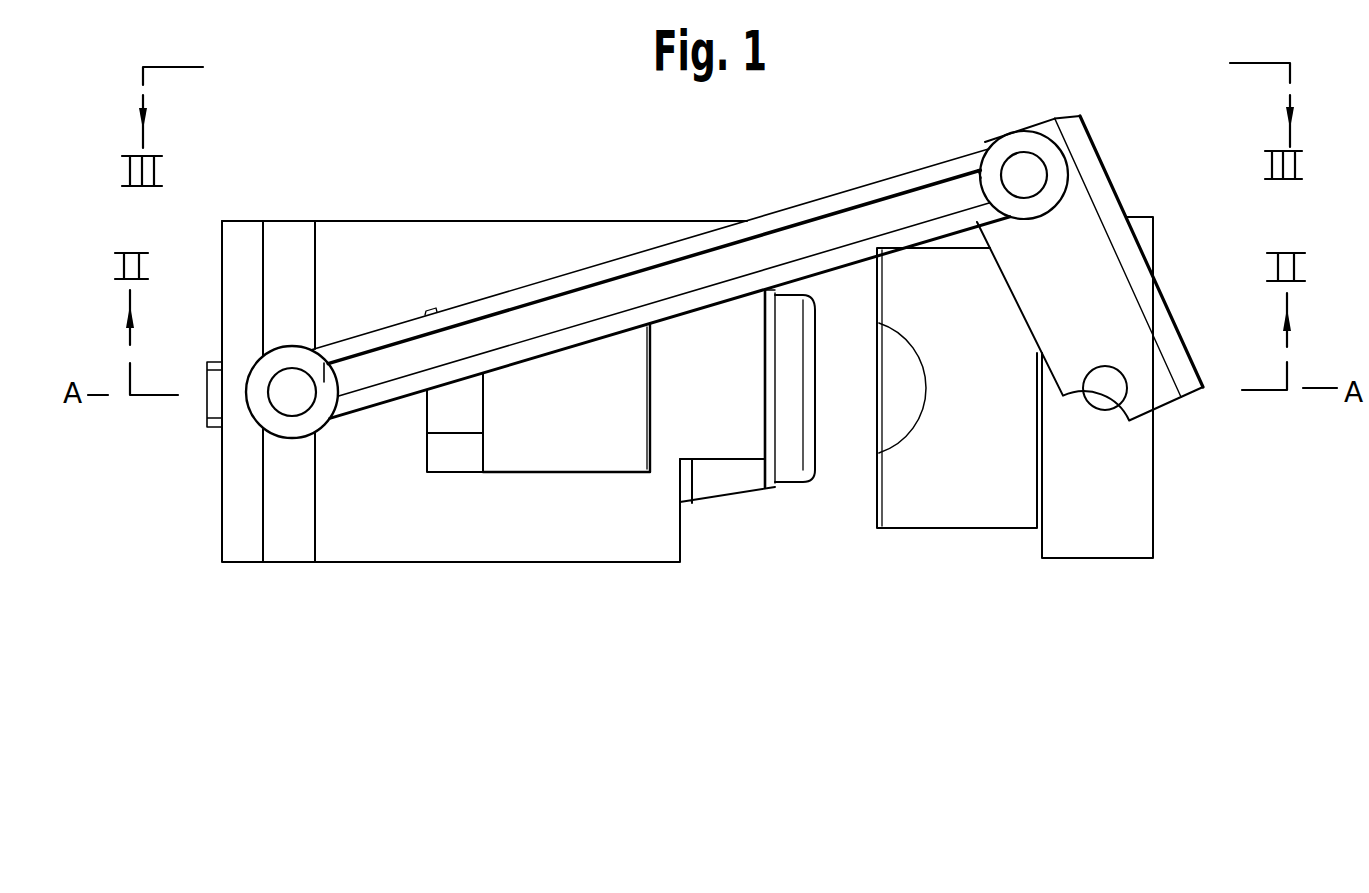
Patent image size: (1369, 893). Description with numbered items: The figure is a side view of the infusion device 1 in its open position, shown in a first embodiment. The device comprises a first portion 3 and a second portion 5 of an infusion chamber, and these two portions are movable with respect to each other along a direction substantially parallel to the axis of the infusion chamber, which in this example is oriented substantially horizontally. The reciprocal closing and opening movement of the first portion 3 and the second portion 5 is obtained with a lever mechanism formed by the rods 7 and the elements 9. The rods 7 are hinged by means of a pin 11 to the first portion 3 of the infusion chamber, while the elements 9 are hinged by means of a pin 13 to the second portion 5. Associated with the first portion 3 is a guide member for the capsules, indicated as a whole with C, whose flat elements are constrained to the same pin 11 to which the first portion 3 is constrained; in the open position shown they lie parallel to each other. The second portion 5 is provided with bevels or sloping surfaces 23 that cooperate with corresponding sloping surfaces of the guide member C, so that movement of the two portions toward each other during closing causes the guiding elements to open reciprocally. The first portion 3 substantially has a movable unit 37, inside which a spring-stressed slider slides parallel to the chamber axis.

The infusion device 1 is at (557, 185).
The first portion of the infusion chamber 3 is at (590, 433).
The second portion of the infusion chamber 5 is at (980, 542).
The rods of the lever mechanism 7 is at (817, 217).
The elements of the lever mechanism 9 is at (1092, 190).
The pin 11 is at (285, 397).
The pin 13 is at (1113, 390).
The sloping surfaces 23 is at (903, 367).
The movable unit 37 is at (550, 447).
The guide member for the capsules C is at (725, 480).